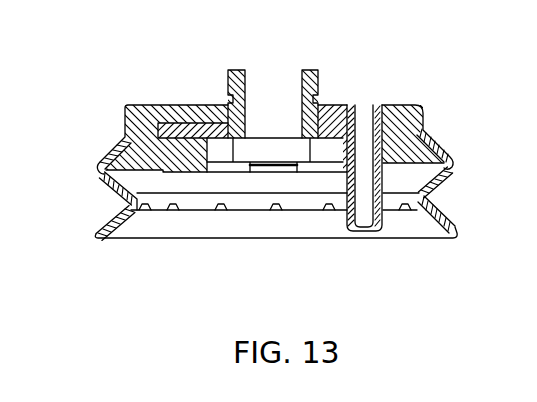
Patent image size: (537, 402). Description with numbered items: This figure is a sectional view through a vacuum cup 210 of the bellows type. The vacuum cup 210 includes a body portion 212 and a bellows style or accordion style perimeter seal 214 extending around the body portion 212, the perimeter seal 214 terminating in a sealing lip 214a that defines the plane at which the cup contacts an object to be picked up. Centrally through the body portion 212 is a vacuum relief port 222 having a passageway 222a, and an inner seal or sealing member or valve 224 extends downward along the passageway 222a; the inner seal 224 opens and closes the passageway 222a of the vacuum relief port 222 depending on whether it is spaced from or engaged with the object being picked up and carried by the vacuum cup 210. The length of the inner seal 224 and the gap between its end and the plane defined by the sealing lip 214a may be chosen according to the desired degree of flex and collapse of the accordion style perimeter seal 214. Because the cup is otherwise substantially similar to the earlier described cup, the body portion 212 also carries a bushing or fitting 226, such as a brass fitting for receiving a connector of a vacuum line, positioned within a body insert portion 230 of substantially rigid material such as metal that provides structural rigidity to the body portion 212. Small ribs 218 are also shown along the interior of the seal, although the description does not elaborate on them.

The vacuum cup 210 is at (110, 95).
The body portion 212 is at (157, 95).
The perimeter seal 214 is at (446, 202).
The sealing lip 214a is at (94, 246).
The ribs 218 is at (245, 226).
The vacuum relief port 222 is at (393, 91).
The passageway 222a is at (362, 117).
The inner seal 224 is at (380, 228).
The bushing 226 is at (248, 80).
The body insert portion 230 is at (325, 110).